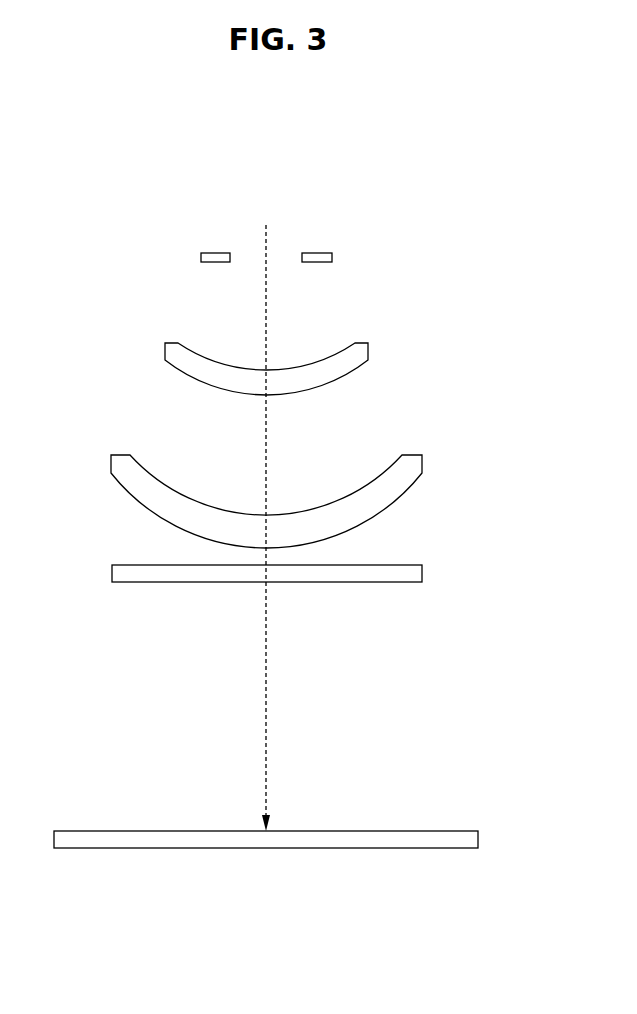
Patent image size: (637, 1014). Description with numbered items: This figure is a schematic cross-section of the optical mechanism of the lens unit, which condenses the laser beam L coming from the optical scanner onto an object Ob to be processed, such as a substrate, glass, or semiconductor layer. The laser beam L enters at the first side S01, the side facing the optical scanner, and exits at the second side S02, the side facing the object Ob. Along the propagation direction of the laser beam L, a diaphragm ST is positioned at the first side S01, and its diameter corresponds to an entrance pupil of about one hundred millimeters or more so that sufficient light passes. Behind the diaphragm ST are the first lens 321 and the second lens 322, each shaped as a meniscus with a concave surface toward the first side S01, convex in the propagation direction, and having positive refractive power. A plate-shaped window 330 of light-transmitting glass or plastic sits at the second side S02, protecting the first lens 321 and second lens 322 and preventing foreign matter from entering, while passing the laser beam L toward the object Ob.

The diaphragm ST is at (333, 256).
The first side S01 is at (292, 241).
The first lens 321 is at (355, 350).
The second lens 322 is at (408, 468).
The window 330 is at (410, 573).
The second side S02 is at (300, 596).
The laser beam L is at (268, 688).
The object Ob is at (450, 840).